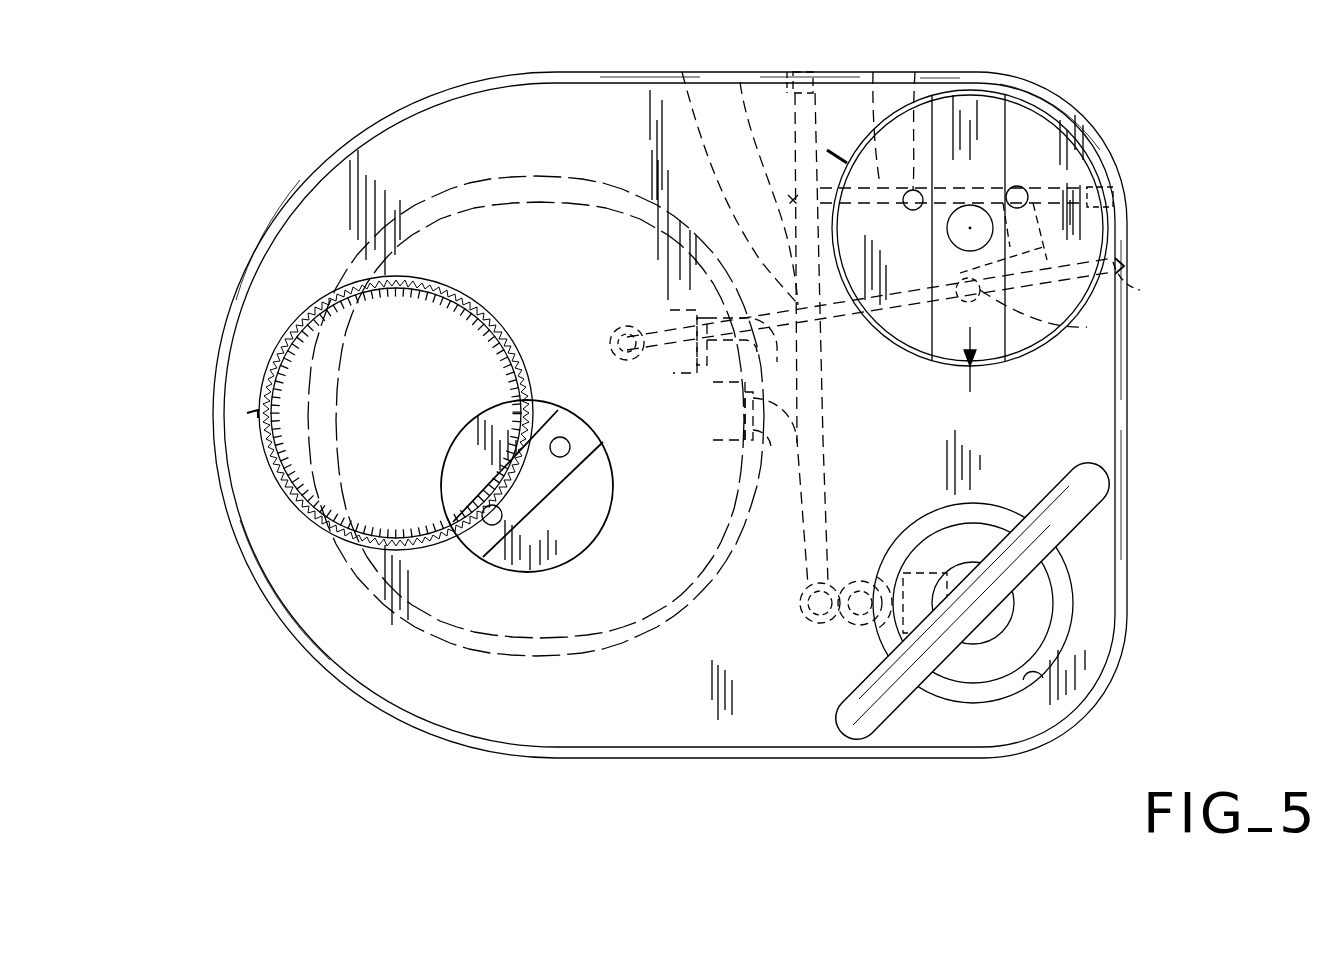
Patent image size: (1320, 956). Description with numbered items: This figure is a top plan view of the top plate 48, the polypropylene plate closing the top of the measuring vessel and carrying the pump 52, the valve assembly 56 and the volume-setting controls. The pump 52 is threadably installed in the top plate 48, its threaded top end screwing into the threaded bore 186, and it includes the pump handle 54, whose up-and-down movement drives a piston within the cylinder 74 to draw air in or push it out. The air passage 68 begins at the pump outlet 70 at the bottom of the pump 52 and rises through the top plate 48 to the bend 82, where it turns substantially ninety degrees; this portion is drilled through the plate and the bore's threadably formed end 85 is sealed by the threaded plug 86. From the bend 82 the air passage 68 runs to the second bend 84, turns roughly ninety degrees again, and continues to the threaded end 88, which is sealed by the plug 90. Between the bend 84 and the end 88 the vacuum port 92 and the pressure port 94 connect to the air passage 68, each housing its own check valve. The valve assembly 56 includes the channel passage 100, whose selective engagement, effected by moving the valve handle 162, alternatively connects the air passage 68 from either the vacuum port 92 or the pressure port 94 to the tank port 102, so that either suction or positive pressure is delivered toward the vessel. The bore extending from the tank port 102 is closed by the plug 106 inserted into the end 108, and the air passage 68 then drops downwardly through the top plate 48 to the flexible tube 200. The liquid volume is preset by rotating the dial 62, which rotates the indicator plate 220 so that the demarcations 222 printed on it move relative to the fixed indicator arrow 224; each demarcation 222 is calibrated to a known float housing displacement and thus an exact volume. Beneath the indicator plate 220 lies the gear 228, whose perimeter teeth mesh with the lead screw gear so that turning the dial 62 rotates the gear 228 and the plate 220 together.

The top plate 48 is at (433, 135).
The valve assembly 56 is at (1090, 50).
The pump 52 is at (953, 712).
The pump handle 54 is at (858, 723).
The dial 62 is at (466, 548).
The air passage 68 is at (688, 72).
The pump outlet 70 is at (858, 630).
The cylinder 74 is at (1000, 703).
The bend 82 is at (805, 627).
The second bend 84 is at (740, 82).
The end 85 is at (800, 72).
The threaded plug 86 is at (787, 72).
The threaded end 88 is at (1120, 192).
The plug 90 is at (1117, 178).
The vacuum port 92 is at (915, 72).
The pressure port 94 is at (1017, 186).
The channel passage 100 is at (1117, 242).
The tank port 102 is at (1090, 328).
The plug 106 is at (1140, 290).
The end 108 is at (1130, 267).
The valve handle 162 is at (1050, 352).
The threaded bore 186 is at (1023, 680).
The flexible tube 200 is at (648, 645).
The indicator plate 220 is at (298, 333).
The demarcations 222 is at (313, 305).
The indicator arrow 224 is at (247, 413).
The gear 228 is at (361, 545).